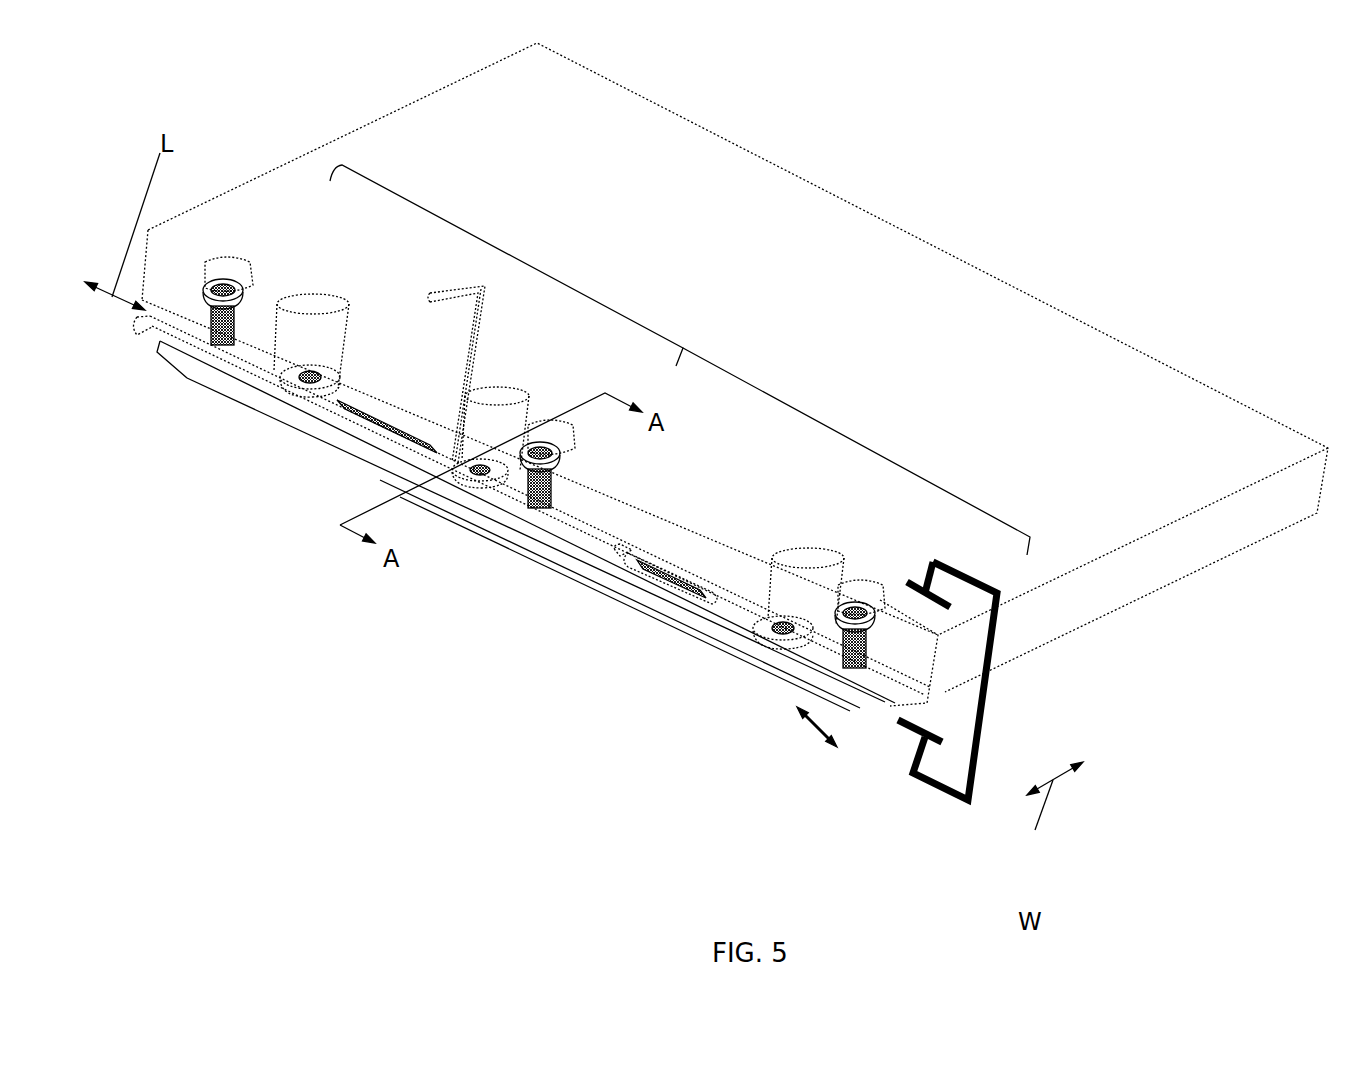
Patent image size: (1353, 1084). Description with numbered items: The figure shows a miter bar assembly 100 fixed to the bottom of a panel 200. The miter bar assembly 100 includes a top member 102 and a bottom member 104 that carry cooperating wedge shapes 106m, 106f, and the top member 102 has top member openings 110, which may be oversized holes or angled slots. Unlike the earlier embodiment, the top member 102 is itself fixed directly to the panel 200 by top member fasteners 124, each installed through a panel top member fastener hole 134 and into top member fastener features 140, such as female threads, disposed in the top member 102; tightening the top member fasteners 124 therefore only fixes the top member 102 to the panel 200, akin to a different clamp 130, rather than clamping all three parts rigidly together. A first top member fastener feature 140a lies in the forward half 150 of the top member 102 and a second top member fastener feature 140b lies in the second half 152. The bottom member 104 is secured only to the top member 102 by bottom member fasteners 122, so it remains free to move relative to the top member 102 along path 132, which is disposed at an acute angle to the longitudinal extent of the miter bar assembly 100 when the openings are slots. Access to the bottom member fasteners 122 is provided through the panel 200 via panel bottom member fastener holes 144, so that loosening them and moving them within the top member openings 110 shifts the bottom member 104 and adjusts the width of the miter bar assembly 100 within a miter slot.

The miter bar assembly 100 is at (229, 493).
The top member 102 is at (257, 370).
The bottom member 104 is at (187, 374).
The wedge shape 106m is at (657, 595).
The wedge shape 106f is at (680, 603).
The top member openings 110 is at (312, 397).
The bottom member fasteners 122 is at (291, 388).
The top member fasteners 124 is at (224, 322).
The clamp 130 is at (988, 703).
The path 132 is at (813, 730).
The panel top member fastener hole 134 is at (236, 262).
The top member fastener features 140 is at (491, 526).
The first top member fastener feature 140a is at (489, 443).
The second top member fastener feature 140b is at (853, 667).
The panel bottom member fastener holes 144 is at (342, 305).
The forward half 150 is at (505, 250).
The second half 152 is at (858, 443).
The panel 200 is at (558, 143).